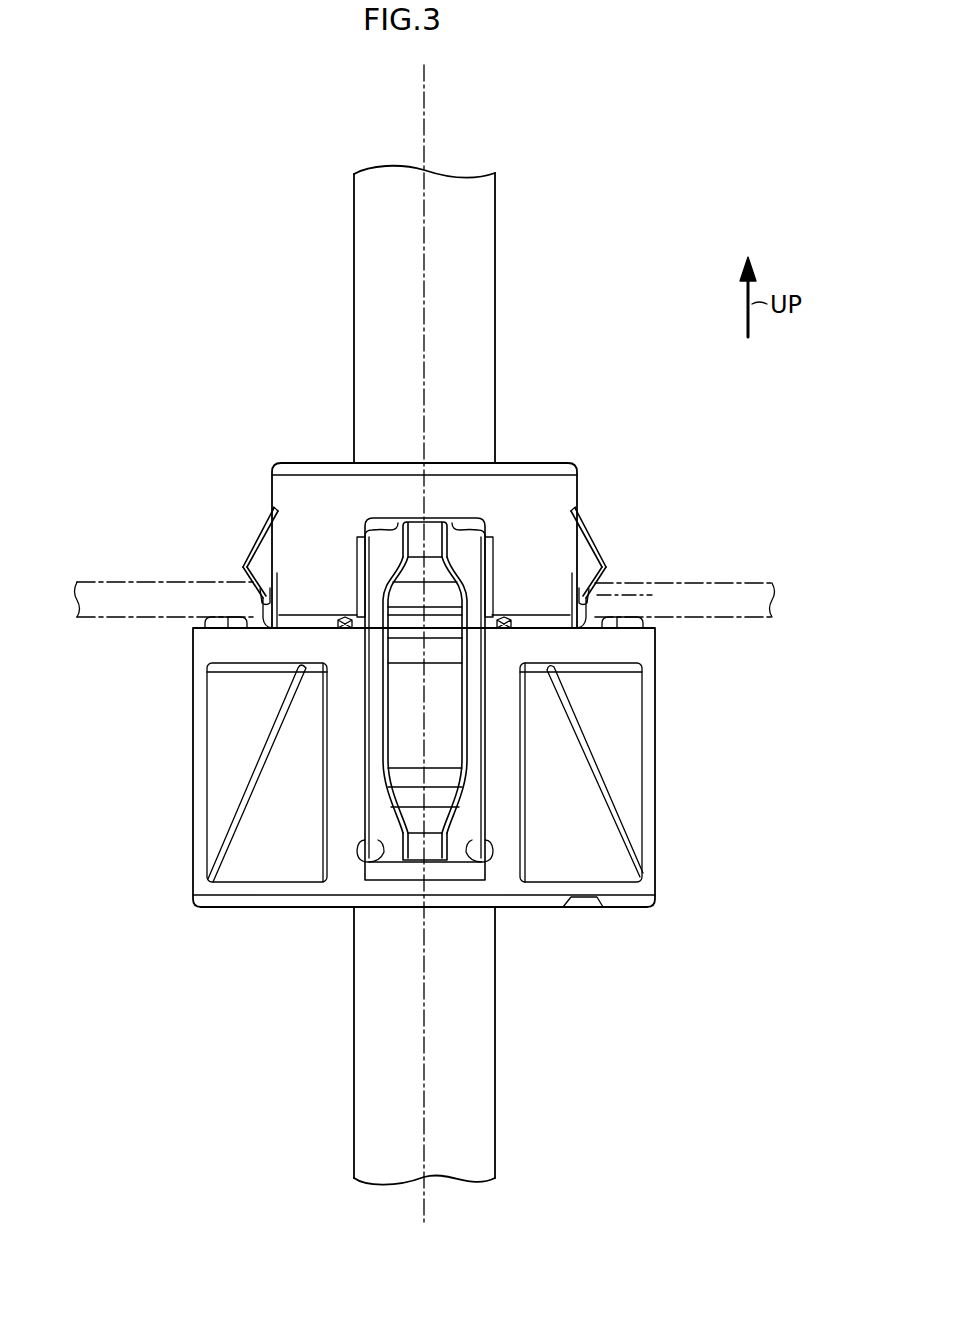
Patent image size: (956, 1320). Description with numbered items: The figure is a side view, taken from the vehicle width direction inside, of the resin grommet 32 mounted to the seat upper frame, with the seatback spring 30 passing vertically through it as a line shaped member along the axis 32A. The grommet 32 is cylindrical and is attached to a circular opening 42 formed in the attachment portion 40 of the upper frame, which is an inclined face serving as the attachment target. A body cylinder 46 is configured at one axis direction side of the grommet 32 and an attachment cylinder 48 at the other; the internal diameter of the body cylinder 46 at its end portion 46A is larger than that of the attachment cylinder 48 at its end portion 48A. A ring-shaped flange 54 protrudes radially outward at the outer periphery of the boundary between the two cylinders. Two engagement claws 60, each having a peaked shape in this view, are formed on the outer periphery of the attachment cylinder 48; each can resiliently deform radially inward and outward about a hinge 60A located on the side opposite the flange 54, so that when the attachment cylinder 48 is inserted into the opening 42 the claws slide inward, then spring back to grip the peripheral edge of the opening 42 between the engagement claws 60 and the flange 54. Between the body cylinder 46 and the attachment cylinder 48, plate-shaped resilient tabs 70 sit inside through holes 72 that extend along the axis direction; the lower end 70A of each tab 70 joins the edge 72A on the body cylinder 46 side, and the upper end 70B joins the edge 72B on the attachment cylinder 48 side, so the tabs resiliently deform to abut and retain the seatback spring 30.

The seatback spring 30 is at (499, 217).
The grommet 32 is at (679, 444).
The axis 32A is at (426, 125).
The attachment portion 40 is at (439, 557).
The opening 42 is at (652, 595).
The body cylinder 46 is at (467, 797).
The end portion 46A is at (523, 909).
The attachment cylinder 48 is at (461, 514).
The end portion 48A is at (533, 462).
The flange 54 is at (651, 641).
The engagement claw 60 is at (420, 559).
The hinge 60A is at (268, 524).
The resilient tab 70 is at (489, 640).
The one end 70A is at (449, 847).
The other end 70B is at (456, 527).
The through hole 72 is at (403, 677).
The edge 72A is at (366, 843).
The edge 72B is at (490, 540).